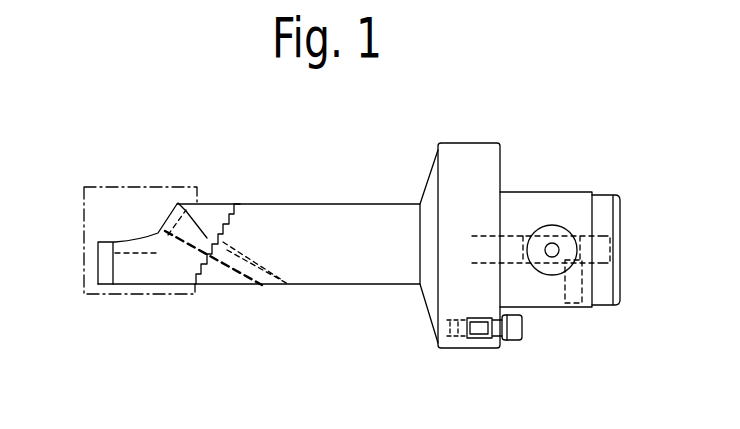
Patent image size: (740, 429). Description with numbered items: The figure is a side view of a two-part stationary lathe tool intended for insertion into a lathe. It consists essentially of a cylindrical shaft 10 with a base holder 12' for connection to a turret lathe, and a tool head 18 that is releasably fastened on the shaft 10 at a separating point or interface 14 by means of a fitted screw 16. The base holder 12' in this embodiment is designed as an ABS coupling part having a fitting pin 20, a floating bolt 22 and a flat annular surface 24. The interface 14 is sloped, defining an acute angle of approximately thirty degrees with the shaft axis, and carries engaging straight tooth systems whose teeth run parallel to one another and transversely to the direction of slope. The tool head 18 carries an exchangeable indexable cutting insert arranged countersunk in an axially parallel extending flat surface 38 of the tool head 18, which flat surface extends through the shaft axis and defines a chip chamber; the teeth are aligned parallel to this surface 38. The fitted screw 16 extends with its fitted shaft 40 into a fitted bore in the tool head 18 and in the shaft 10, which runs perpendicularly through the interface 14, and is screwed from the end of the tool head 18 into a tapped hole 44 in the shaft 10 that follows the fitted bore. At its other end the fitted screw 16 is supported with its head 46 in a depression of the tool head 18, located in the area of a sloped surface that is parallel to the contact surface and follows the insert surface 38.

The cylindrical shaft 10 is at (323, 267).
The base holder 12' is at (545, 210).
The separating point or interface 14 is at (219, 216).
The fitted screw 16 is at (205, 242).
The tool head 18 is at (167, 262).
The fitting pin 20 is at (575, 213).
The floating bolt 22 is at (552, 267).
The flat annular surface 24 is at (502, 168).
The flat surface 38 is at (120, 239).
The fitted shaft 40 is at (205, 232).
The tapped hole 44 is at (264, 285).
The head 46 is at (170, 243).